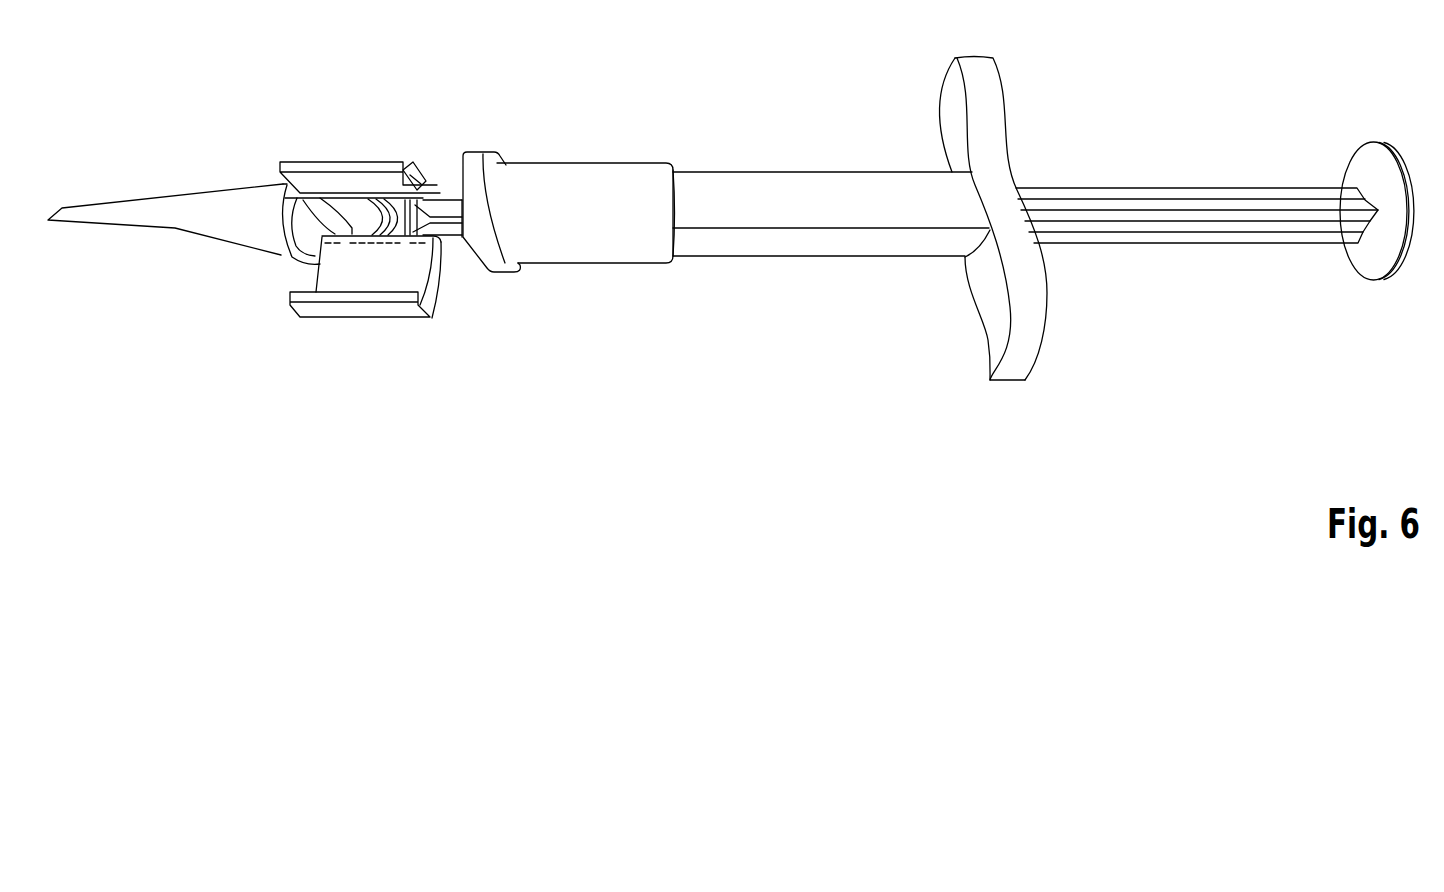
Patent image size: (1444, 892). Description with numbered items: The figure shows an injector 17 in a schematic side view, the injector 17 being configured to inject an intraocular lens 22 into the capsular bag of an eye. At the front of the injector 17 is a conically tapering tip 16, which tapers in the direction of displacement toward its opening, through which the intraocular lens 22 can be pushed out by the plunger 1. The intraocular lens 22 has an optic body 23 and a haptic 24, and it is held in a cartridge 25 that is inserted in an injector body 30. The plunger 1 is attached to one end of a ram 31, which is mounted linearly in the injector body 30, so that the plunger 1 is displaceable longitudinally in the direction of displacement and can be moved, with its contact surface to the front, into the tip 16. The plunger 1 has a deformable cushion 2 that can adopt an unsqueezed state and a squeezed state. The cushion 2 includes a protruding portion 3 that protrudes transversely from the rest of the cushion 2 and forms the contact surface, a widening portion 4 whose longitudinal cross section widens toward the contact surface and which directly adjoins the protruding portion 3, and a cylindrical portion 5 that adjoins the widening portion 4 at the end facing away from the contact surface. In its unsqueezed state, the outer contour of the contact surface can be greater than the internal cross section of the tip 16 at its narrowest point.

The plunger 1 is at (449, 248).
The deformable cushion 2 is at (422, 248).
The protruding portion 3 is at (398, 203).
The widening portion 4 is at (438, 205).
The cylindrical portion 5 is at (452, 203).
The tip 16 is at (113, 204).
The injector 17 is at (614, 86).
The intraocular lens 22 is at (371, 253).
The optic body 23 is at (360, 213).
The haptic 24 is at (322, 212).
The cartridge 25 is at (277, 319).
The injector body 30 is at (262, 181).
The ram 31 is at (462, 210).